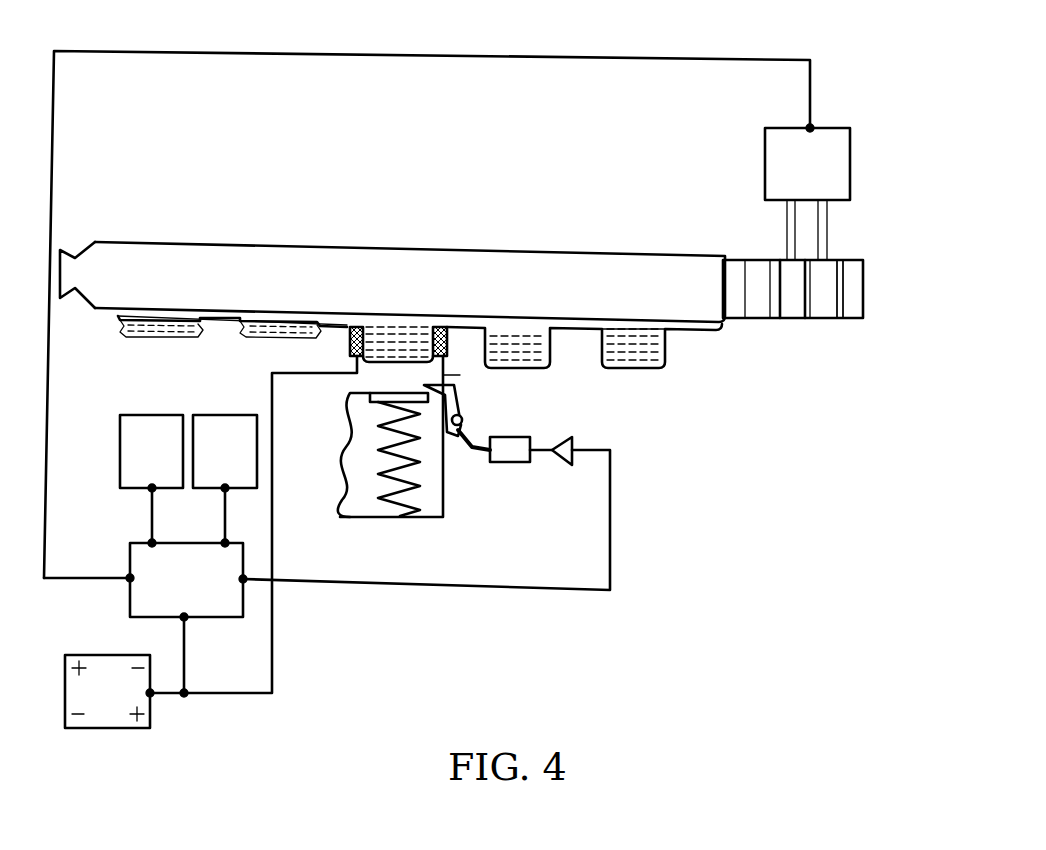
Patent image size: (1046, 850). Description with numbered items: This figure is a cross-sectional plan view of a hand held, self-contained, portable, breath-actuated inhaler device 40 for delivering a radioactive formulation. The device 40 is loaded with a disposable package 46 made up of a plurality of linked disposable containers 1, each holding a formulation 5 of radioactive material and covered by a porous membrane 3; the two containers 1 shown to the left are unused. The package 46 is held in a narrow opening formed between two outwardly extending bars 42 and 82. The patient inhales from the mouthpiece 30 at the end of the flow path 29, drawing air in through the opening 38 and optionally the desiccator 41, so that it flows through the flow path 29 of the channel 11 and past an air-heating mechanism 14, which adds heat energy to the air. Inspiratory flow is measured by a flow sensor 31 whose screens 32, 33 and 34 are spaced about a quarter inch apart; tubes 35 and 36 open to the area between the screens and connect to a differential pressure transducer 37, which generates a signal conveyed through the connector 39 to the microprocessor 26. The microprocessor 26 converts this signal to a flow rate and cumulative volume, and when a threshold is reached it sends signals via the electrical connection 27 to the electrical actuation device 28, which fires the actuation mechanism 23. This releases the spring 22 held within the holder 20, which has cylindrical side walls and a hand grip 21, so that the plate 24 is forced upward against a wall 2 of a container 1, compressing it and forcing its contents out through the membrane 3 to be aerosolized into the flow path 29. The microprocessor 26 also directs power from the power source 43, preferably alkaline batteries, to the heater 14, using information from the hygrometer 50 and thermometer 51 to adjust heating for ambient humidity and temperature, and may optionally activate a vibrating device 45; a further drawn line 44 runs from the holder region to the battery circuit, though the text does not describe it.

The container 1 is at (147, 335).
The wall 2 is at (545, 385).
The porous membrane 3 is at (415, 325).
The formulation 5 is at (623, 337).
The channel 11 is at (172, 242).
The air-heating mechanism 14 is at (730, 318).
The holder 20 is at (447, 467).
The hand grip 21 is at (328, 463).
The spring 22 is at (413, 517).
The actuation mechanism 23 is at (460, 400).
The plate 24 is at (338, 398).
The microprocessor 26 is at (145, 620).
The electrical connection 27 is at (430, 588).
The electrical actuation device 28 is at (510, 463).
The flow path 29 is at (757, 287).
The mouthpiece 30 is at (72, 250).
The flow sensor 31 is at (828, 110).
The screen 32 is at (842, 320).
The screen 33 is at (807, 320).
The screen 34 is at (777, 320).
The tube 35 is at (790, 215).
The tube 36 is at (825, 215).
The differential pressure transducer 37 is at (807, 162).
The opening 38 is at (863, 320).
The connector 39 is at (340, 55).
The inhaler device 40 is at (657, 490).
The desiccator 41 is at (865, 275).
The bar 42 is at (450, 337).
The power source 43 is at (103, 732).
The conductor 44 is at (273, 538).
The vibrating device 45 is at (423, 340).
The disposable package 46 is at (693, 360).
The hygrometer 50 is at (151, 481).
The thermometer 51 is at (225, 481).
The bar 82 is at (347, 328).